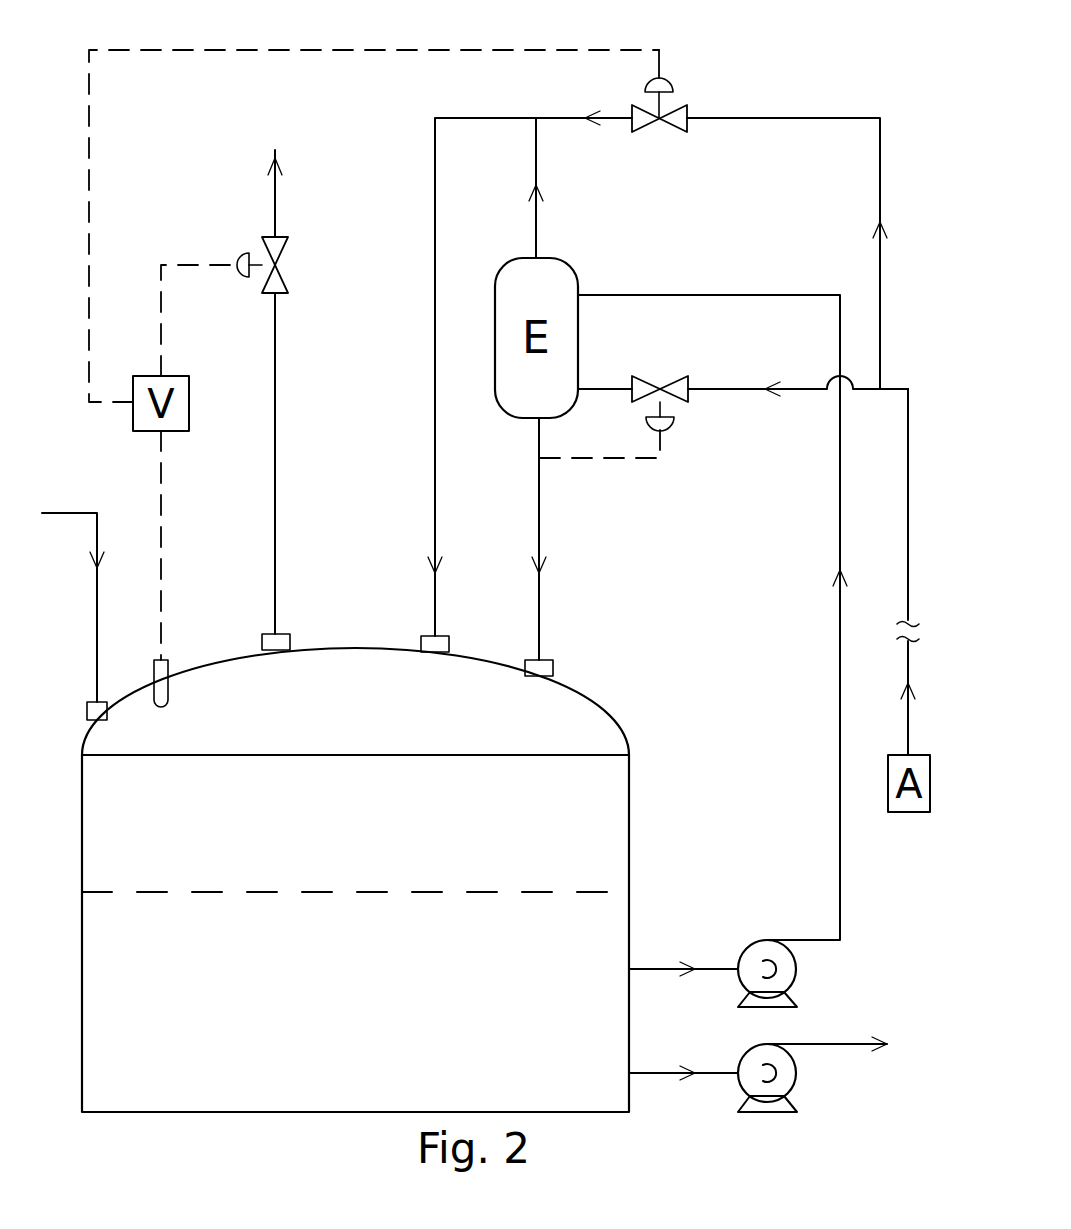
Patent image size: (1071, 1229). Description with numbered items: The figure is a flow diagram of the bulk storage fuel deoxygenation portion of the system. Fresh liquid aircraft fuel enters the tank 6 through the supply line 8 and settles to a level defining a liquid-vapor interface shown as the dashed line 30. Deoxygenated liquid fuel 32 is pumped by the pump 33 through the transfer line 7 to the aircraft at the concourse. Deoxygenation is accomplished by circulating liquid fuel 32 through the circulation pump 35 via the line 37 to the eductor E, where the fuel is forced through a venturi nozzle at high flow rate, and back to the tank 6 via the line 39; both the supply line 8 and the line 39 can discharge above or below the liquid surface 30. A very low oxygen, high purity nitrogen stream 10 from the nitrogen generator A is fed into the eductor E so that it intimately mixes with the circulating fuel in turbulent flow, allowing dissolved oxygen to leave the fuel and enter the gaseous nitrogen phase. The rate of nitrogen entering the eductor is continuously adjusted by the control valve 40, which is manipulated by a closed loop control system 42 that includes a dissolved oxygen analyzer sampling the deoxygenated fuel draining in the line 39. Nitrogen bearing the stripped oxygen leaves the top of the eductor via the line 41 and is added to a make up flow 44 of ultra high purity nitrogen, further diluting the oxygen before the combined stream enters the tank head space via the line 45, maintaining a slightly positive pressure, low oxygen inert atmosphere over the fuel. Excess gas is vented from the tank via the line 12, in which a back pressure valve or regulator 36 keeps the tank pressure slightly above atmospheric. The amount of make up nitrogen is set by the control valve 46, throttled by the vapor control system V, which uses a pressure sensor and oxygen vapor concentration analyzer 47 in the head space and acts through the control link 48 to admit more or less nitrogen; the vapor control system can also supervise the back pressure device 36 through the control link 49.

The tank 6 is at (630, 835).
The transfer line 7 is at (800, 1043).
The supply line 8 is at (65, 513).
The inert gas stream 10 is at (908, 512).
The vent line 12 is at (277, 540).
The liquid-vapor interface 30 is at (280, 892).
The deoxygenated liquid fuel 32 is at (570, 1060).
The pump 33 is at (795, 1070).
The circulation pump 35 is at (760, 942).
The back pressure valve or regulator 36 is at (285, 257).
The circulation line 37 is at (840, 700).
The return line 39 is at (540, 637).
The control valve 40 is at (637, 376).
The eductor overhead line 41 is at (540, 237).
The closed loop control system 42 is at (592, 460).
The make up flow 44 is at (850, 117).
The head space line 45 is at (435, 497).
The control valve 46 is at (672, 108).
The pressure sensor and oxygen vapor concentration analyzer 47 is at (170, 675).
The control link 48 is at (90, 200).
The control link 49 is at (190, 265).